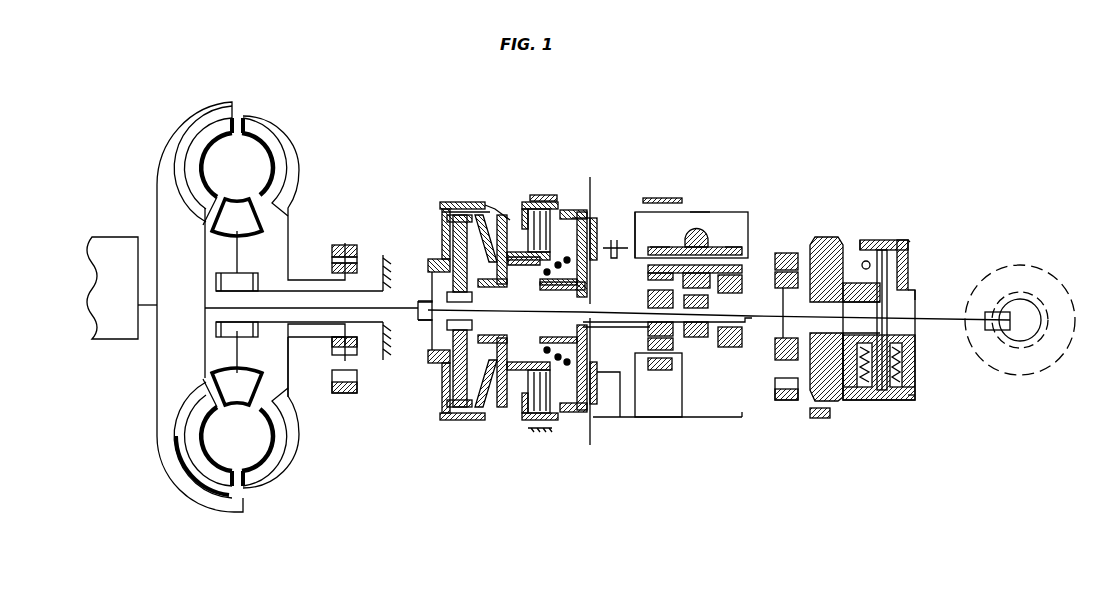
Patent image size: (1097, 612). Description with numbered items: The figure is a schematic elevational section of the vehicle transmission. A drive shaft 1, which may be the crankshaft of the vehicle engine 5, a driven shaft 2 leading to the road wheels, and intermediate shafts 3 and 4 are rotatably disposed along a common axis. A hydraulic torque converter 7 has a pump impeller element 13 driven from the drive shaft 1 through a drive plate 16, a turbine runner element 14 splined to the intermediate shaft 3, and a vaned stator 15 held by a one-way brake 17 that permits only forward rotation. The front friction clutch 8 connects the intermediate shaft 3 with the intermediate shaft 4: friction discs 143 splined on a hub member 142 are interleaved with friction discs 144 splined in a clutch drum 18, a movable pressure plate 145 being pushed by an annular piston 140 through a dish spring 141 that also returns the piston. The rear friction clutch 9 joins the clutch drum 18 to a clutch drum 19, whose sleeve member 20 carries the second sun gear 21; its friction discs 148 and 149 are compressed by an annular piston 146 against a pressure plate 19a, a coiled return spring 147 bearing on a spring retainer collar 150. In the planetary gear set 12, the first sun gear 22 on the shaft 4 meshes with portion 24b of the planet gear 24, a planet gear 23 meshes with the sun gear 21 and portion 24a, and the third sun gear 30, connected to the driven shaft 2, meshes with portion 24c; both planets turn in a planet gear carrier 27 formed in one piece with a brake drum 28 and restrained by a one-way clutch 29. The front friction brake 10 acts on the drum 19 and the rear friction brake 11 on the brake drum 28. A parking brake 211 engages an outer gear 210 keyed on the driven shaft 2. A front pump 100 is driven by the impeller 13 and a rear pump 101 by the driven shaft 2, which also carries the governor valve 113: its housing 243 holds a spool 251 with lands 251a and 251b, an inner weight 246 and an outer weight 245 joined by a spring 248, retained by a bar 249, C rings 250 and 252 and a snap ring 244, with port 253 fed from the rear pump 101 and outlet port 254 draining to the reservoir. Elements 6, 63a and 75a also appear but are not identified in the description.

The drive shaft 1 is at (149, 312).
The driven shaft 2 is at (752, 317).
The intermediate shaft 3 is at (371, 298).
The intermediate shaft 4 is at (496, 312).
The vehicle engine 5 is at (90, 250).
The drive wheel 6 is at (1040, 272).
The hydraulic torque converter 7 is at (266, 112).
The front friction clutch 8 is at (482, 204).
The rear friction clutch 9 is at (590, 208).
The front friction brake 10 is at (553, 194).
The rear friction brake 11 is at (669, 197).
The planetary gear set 12 is at (705, 424).
The pump impeller element 13 is at (288, 142).
The turbine runner element 14 is at (206, 130).
The stator 15 is at (230, 238).
The drive plate 16 is at (158, 168).
The one-way brake 17 is at (247, 280).
The clutch drum 18 is at (446, 208).
The clutch drum 19 is at (540, 202).
The pressure plate 19a is at (528, 210).
The sleeve member 20 is at (606, 329).
The second sun gear 21 is at (650, 290).
The first sun gear 22 is at (697, 338).
The planet gear 23 is at (660, 371).
The planet gear 24 is at (750, 216).
The gear portion 24a is at (668, 249).
The gear portion 24b is at (706, 236).
The gear portion 24c is at (745, 250).
The planet gear carrier 27 is at (636, 214).
The brake drum 28 is at (700, 212).
The one-way clutch 29 is at (614, 247).
The third sun gear 30 is at (731, 348).
The dowel pin 63a is at (540, 431).
The bracket 75a is at (599, 440).
The front pump 100 is at (343, 243).
The rear pump 101 is at (785, 252).
The governor valve 113 is at (911, 238).
The annular piston 140 is at (500, 410).
The dish spring 141 is at (462, 408).
The hub member 142 is at (453, 268).
The friction discs 143 is at (478, 398).
The friction discs 144 is at (447, 421).
The movable pressure plate 145 is at (470, 204).
The annular piston 146 is at (583, 217).
The coiled return spring 147 is at (607, 288).
The friction discs 148 is at (562, 412).
The friction discs 149 is at (545, 421).
The spring retainer collar 150 is at (545, 279).
The outer gear 210 is at (812, 392).
The parking brake 211 is at (820, 419).
The housing 243 is at (916, 400).
The snap ring 244 is at (905, 402).
The outer weight 245 is at (916, 370).
The inner weight 246 is at (890, 401).
The spring 248 is at (840, 401).
The bar 249 is at (880, 322).
The C ring 250 is at (856, 401).
The spool 251 is at (909, 270).
The land 251a is at (910, 246).
The land 251b is at (917, 293).
The C ring 252 is at (884, 250).
The port 253 is at (848, 268).
The outlet port 254 is at (866, 260).